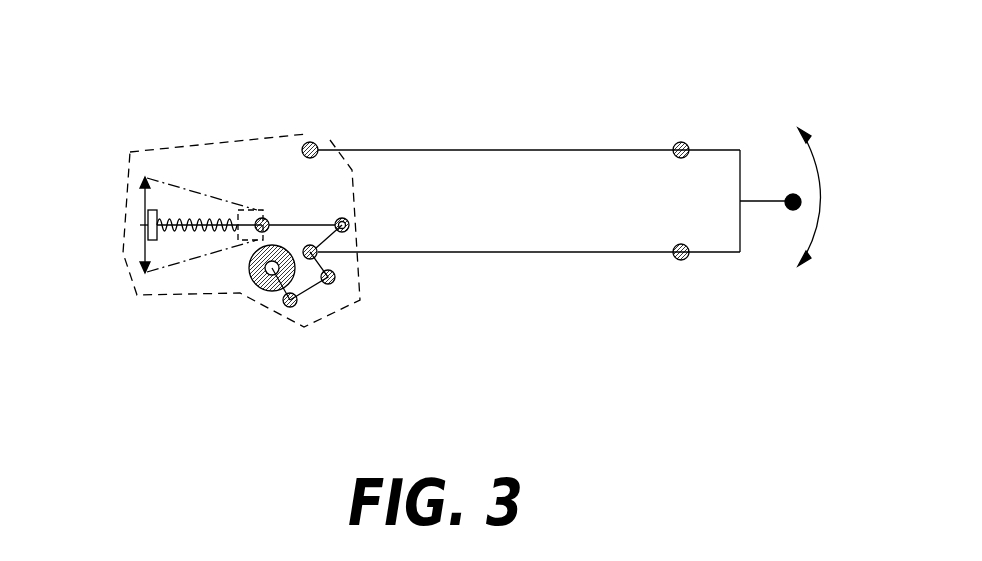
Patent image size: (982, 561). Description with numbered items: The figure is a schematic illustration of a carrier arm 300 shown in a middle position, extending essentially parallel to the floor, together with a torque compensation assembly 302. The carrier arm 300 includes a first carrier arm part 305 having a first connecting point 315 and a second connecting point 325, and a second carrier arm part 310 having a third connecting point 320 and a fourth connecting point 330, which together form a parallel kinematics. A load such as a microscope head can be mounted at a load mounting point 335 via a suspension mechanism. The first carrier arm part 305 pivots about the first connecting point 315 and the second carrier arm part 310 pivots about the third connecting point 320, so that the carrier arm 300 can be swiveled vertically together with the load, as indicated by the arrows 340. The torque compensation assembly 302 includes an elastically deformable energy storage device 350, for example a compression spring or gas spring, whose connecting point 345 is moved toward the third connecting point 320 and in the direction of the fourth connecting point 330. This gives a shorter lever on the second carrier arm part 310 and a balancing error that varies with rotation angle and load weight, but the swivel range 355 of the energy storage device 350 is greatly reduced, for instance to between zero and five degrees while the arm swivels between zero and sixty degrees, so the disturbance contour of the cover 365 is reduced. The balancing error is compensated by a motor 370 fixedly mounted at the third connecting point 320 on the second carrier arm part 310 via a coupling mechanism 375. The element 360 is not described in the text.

The carrier arm 300 is at (612, 100).
The torque compensation assembly 302 is at (113, 315).
The first carrier arm part 305 is at (479, 150).
The second carrier arm part 310 is at (500, 253).
The first connecting point 315 is at (311, 142).
The third connecting point 320 is at (337, 264).
The second connecting point 325 is at (688, 143).
The fourth connecting point 330 is at (681, 261).
The load mounting point 335 is at (793, 211).
The arrows 340 is at (827, 218).
The connecting point 345 is at (350, 230).
The elastically deformable energy storage device 350 is at (197, 218).
The swivel range 355 is at (188, 262).
The plate 360 is at (140, 218).
The cover 365 is at (110, 200).
The motor 370 is at (255, 288).
The coupling mechanism 375 is at (313, 294).